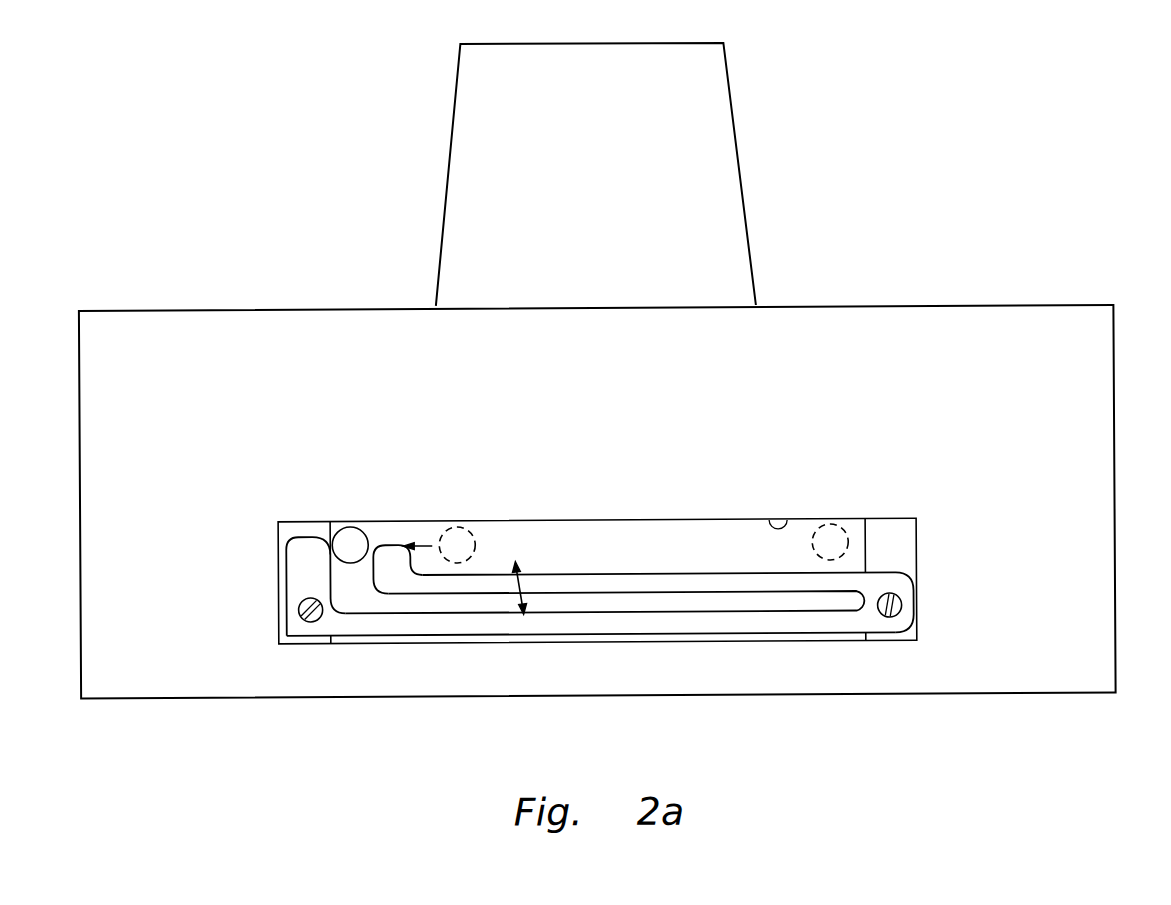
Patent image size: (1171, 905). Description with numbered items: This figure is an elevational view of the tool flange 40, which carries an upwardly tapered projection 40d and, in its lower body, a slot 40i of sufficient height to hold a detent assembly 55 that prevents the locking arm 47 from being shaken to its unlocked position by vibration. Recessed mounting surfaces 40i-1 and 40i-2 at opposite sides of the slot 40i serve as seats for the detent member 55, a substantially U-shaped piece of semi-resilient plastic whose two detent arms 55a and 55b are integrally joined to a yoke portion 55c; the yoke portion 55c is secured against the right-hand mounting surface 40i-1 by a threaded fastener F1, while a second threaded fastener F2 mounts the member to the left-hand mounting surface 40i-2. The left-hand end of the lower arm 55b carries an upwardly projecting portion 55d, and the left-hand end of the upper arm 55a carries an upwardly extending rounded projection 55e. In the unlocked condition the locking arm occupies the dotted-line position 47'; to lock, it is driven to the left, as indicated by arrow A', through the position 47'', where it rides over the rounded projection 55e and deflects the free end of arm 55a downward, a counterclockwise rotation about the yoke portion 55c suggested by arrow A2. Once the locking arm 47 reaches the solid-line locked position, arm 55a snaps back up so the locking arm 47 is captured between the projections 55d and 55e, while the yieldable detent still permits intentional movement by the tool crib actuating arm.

The male flange 40 is at (1170, 246).
The tapered projection 40d is at (738, 144).
The slot 40i is at (791, 522).
The recessed mounting surface 40i-1 is at (903, 559).
The recessed mounting surface 40i-2 is at (285, 535).
The locking arm 47 is at (330, 512).
The unlocked position of locking arm 47' is at (873, 515).
The intermediate position of locking arm 47'' is at (501, 509).
The detent assembly 55 is at (591, 572).
The detent arm 55a is at (640, 580).
The detent arm 55b is at (670, 623).
The yoke portion 55c is at (893, 589).
The projection 55d is at (298, 565).
The rounded projection 55e is at (388, 557).
The arrow A' is at (434, 510).
The arrow A2 is at (516, 586).
The threaded fastener F1 is at (896, 612).
The threaded fastener F2 is at (302, 611).